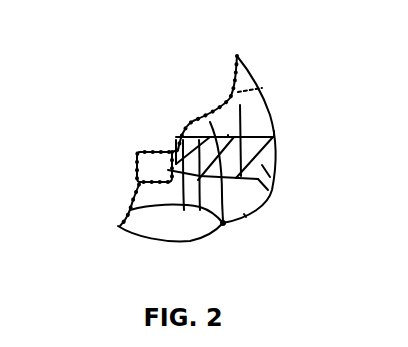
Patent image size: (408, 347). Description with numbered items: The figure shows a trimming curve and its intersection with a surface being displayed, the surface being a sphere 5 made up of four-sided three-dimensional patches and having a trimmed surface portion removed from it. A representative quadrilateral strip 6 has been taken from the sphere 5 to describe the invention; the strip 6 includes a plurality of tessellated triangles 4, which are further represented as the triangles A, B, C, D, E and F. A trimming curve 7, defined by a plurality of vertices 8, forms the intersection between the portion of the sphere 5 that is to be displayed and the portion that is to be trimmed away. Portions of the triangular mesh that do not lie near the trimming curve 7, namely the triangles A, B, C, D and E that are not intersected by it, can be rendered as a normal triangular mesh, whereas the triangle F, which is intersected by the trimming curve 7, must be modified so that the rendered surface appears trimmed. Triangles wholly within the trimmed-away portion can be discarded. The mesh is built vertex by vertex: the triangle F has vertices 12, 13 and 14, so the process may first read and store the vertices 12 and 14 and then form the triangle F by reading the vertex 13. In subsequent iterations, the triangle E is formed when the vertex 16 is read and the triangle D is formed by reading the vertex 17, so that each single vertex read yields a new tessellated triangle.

The tessellated triangles 4 is at (273, 155).
The sphere 5 is at (246, 217).
The quadrilateral strip 6 is at (275, 168).
The trimming curve 7 is at (210, 122).
The vertices 8 is at (234, 60).
The vertex 12 is at (137, 176).
The vertex 13 is at (212, 128).
The vertex 14 is at (176, 137).
The vertex 16 is at (200, 210).
The vertex 17 is at (245, 130).
The triangle A is at (260, 190).
The triangle B is at (274, 131).
The triangle C is at (224, 224).
The triangle D is at (228, 135).
The triangle E is at (184, 210).
The triangle F is at (176, 140).